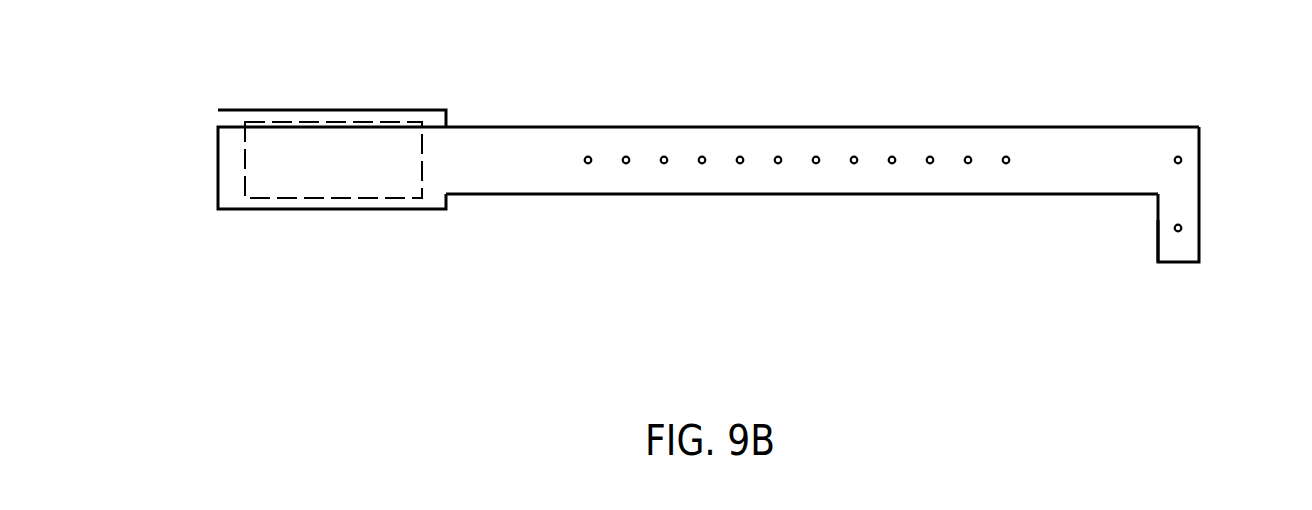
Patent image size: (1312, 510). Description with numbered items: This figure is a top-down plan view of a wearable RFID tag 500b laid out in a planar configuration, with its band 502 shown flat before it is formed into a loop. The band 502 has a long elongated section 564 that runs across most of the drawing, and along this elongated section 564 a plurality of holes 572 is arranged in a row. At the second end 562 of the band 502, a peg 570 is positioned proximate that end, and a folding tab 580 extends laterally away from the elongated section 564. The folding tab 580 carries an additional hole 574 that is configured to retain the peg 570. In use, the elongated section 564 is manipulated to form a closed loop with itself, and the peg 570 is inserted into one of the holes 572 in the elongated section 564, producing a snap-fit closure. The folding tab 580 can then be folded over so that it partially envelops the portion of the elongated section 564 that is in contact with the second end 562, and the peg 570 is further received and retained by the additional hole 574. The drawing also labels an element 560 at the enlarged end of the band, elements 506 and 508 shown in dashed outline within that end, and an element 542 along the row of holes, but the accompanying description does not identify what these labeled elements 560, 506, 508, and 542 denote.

The RFID tag 500b is at (107, 79).
The housing portion 560 is at (217, 128).
The electronic module 506 is at (237, 160).
The internal component 508 is at (365, 175).
The elongated section 564 is at (564, 127).
The band 502 is at (822, 148).
The adjustment holes 542 is at (660, 178).
The holes 572 is at (1005, 153).
The peg 570 is at (1183, 161).
The second end 562 is at (1202, 177).
The folding tab 580 is at (1157, 220).
The additional hole 574 is at (1180, 232).